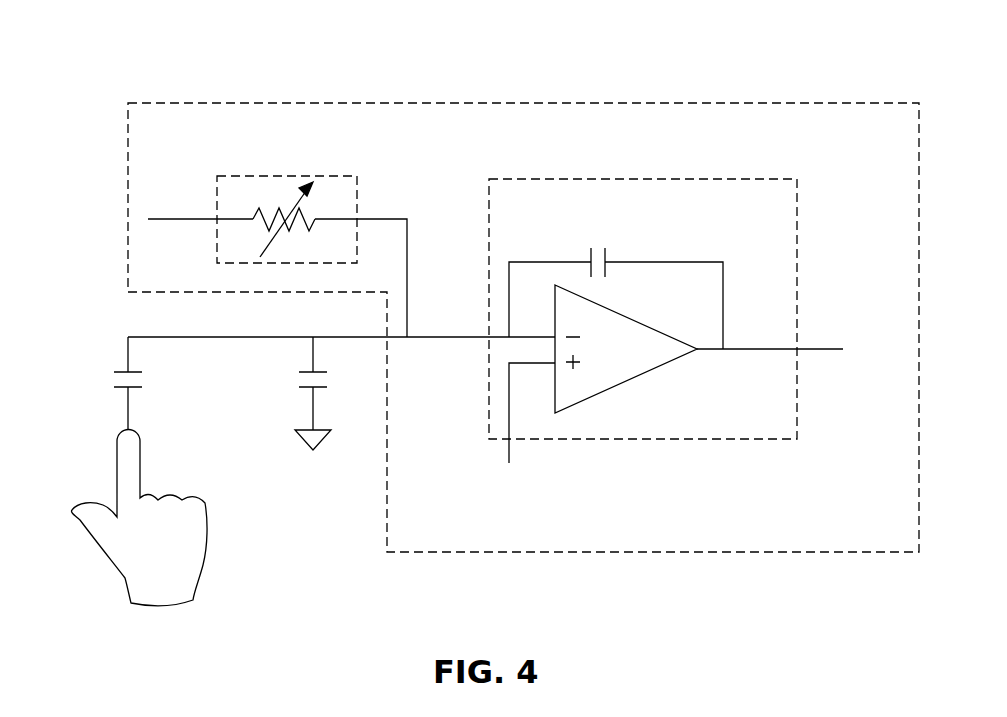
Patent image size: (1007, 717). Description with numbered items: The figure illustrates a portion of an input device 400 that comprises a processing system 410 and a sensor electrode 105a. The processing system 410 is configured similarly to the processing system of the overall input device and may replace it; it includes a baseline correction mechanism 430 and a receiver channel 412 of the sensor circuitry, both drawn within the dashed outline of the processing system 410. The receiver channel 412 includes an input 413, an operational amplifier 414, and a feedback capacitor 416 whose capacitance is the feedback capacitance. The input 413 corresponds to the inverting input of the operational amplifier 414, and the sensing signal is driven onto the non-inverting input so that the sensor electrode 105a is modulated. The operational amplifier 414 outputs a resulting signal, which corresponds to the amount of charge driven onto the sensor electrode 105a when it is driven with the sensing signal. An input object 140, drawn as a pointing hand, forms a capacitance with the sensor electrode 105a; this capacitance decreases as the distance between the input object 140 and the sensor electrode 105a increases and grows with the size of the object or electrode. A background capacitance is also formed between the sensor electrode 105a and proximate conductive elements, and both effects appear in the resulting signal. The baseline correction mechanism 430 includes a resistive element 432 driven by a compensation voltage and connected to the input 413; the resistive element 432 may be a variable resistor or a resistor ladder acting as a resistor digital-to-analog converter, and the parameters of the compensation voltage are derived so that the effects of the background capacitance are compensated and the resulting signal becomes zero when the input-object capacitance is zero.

The input device 400 is at (126, 60).
The sensor electrode 105a is at (146, 336).
The input object 140 is at (125, 578).
The processing system 410 is at (892, 103).
The baseline correction mechanism 430 is at (358, 195).
The resistive element 432 is at (312, 213).
The input 413 is at (419, 335).
The receiver channel 412 is at (758, 179).
The operational amplifier 414 is at (625, 382).
The feedback capacitor 416 is at (620, 238).